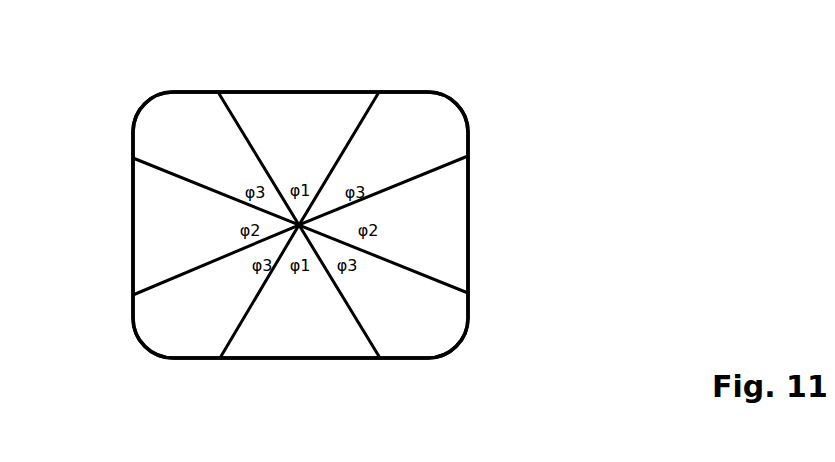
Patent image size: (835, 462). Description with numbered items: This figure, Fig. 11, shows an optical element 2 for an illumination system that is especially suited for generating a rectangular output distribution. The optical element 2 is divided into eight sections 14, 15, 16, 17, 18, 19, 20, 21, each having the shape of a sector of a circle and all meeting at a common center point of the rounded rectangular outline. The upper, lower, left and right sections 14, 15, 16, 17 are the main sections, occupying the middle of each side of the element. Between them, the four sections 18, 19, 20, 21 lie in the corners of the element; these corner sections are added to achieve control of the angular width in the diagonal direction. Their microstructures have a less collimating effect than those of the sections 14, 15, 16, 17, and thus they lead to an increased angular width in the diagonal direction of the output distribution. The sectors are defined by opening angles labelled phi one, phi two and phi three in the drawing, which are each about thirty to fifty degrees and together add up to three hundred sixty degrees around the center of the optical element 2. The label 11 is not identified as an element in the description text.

The optical element 2 is at (457, 103).
The figure reference 11 is at (684, 252).
The upper section 14 is at (300, 113).
The lower section 15 is at (165, 253).
The left section 16 is at (290, 340).
The right section 17 is at (441, 229).
The corner section 18 is at (427, 113).
The corner section 19 is at (173, 130).
The corner section 20 is at (192, 340).
The corner section 21 is at (423, 335).